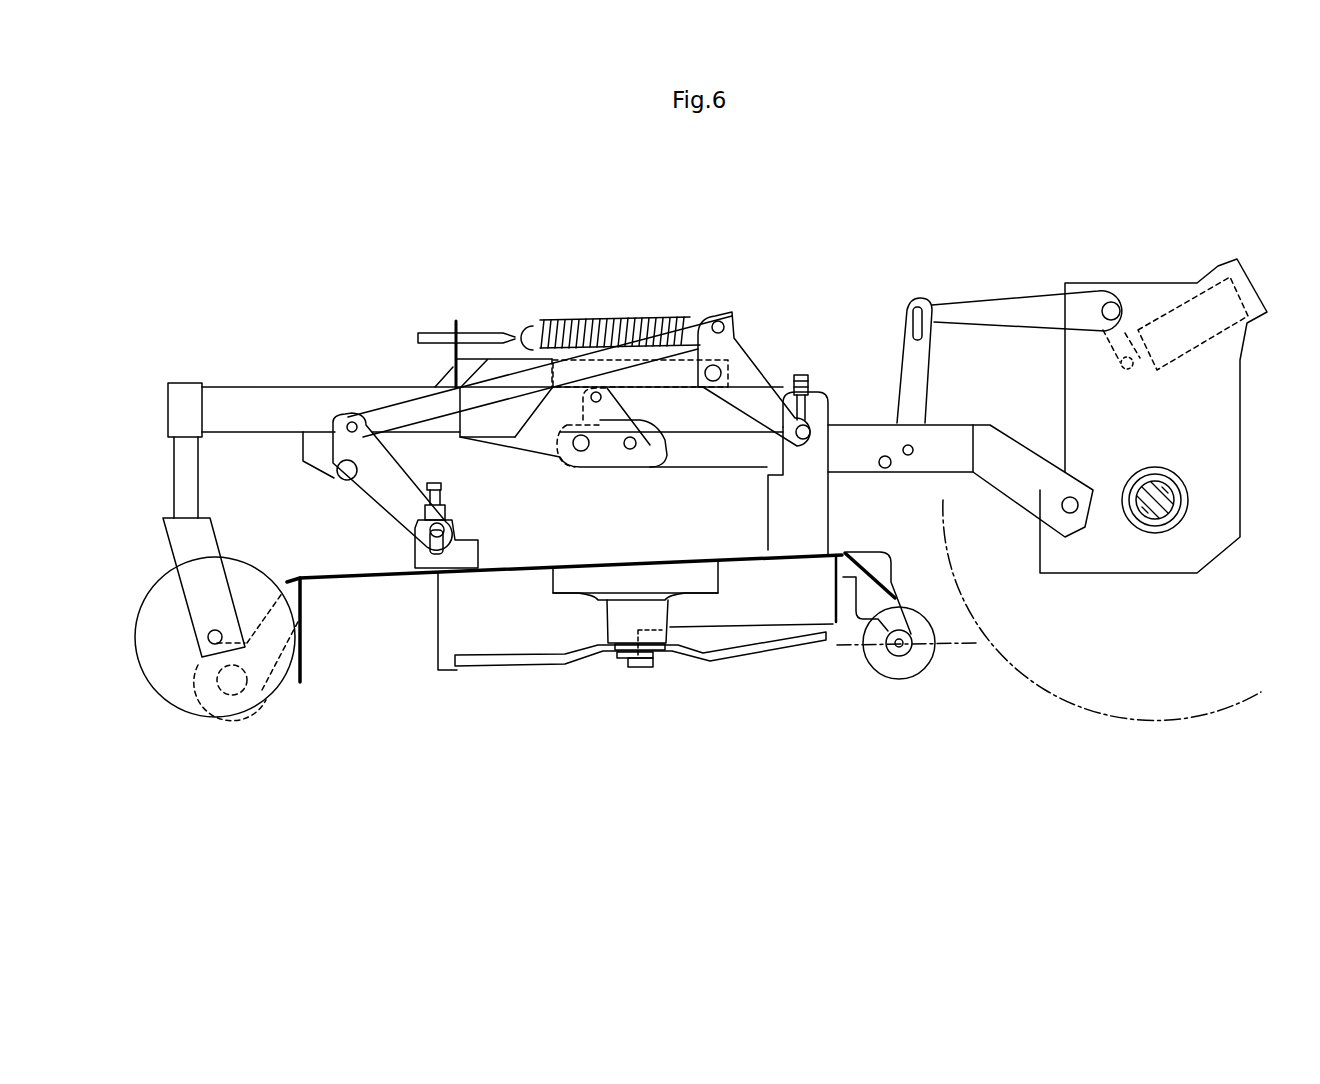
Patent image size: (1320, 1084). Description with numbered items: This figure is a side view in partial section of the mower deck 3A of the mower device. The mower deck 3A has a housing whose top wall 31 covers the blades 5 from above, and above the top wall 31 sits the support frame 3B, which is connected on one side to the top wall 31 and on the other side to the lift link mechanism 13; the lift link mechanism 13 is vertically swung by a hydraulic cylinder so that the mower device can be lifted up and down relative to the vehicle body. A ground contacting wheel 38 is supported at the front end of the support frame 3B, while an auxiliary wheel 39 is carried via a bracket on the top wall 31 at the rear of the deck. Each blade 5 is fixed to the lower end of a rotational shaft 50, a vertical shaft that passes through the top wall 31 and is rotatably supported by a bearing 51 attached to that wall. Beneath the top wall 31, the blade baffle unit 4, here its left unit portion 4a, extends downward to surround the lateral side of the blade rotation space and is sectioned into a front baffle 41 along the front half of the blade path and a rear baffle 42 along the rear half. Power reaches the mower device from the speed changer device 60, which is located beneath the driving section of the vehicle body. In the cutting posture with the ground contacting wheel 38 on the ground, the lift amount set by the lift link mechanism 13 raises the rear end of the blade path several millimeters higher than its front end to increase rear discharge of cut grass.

The support frame 3B is at (305, 408).
The top wall 31 is at (533, 570).
The lift link mechanism 13 is at (845, 423).
The mower deck 3A is at (591, 627).
The left unit portion 4a is at (591, 650).
The blade baffle unit 4 is at (591, 617).
The front baffle 41 is at (443, 635).
The rear baffle 42 is at (833, 597).
The bearing 51 is at (620, 627).
The rotational shaft 50 is at (640, 668).
The blade 5 is at (509, 650).
The ground contacting wheel 38 is at (192, 698).
The auxiliary wheel 39 is at (282, 690).
The speed changer device 60 is at (1155, 553).